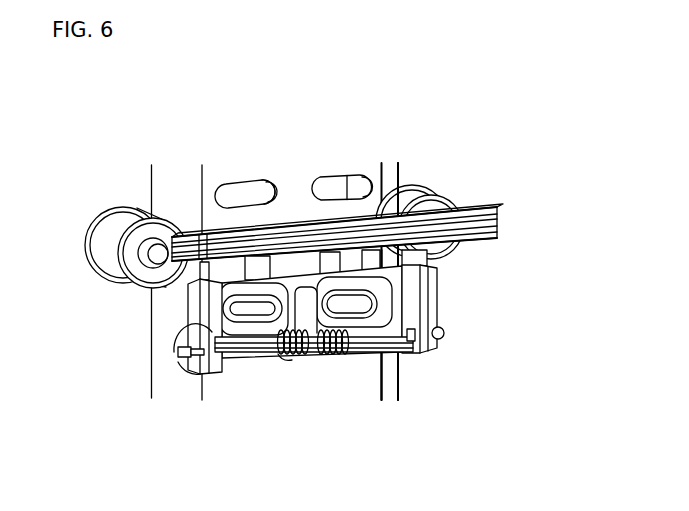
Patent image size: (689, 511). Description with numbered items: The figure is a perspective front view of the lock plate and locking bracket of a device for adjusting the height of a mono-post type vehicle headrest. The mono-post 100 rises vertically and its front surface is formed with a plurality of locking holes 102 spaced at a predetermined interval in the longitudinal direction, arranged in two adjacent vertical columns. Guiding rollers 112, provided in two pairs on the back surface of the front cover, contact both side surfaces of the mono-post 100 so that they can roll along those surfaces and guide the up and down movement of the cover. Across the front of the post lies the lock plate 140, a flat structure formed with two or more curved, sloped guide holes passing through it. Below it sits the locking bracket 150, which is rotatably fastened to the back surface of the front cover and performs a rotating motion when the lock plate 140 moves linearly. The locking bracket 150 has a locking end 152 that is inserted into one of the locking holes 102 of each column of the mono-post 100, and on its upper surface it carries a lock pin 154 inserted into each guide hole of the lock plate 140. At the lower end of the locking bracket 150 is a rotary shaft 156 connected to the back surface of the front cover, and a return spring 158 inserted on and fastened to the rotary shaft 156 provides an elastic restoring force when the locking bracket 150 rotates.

The mono-post 100 is at (146, 178).
The locking holes 102 is at (328, 192).
The guiding rollers 112 is at (108, 222).
The lock plate 140 is at (485, 203).
The locking bracket 150 is at (455, 305).
The locking end 152 is at (396, 323).
The lock pin 154 is at (433, 274).
The rotary shaft 156 is at (177, 352).
The return spring 158 is at (307, 357).